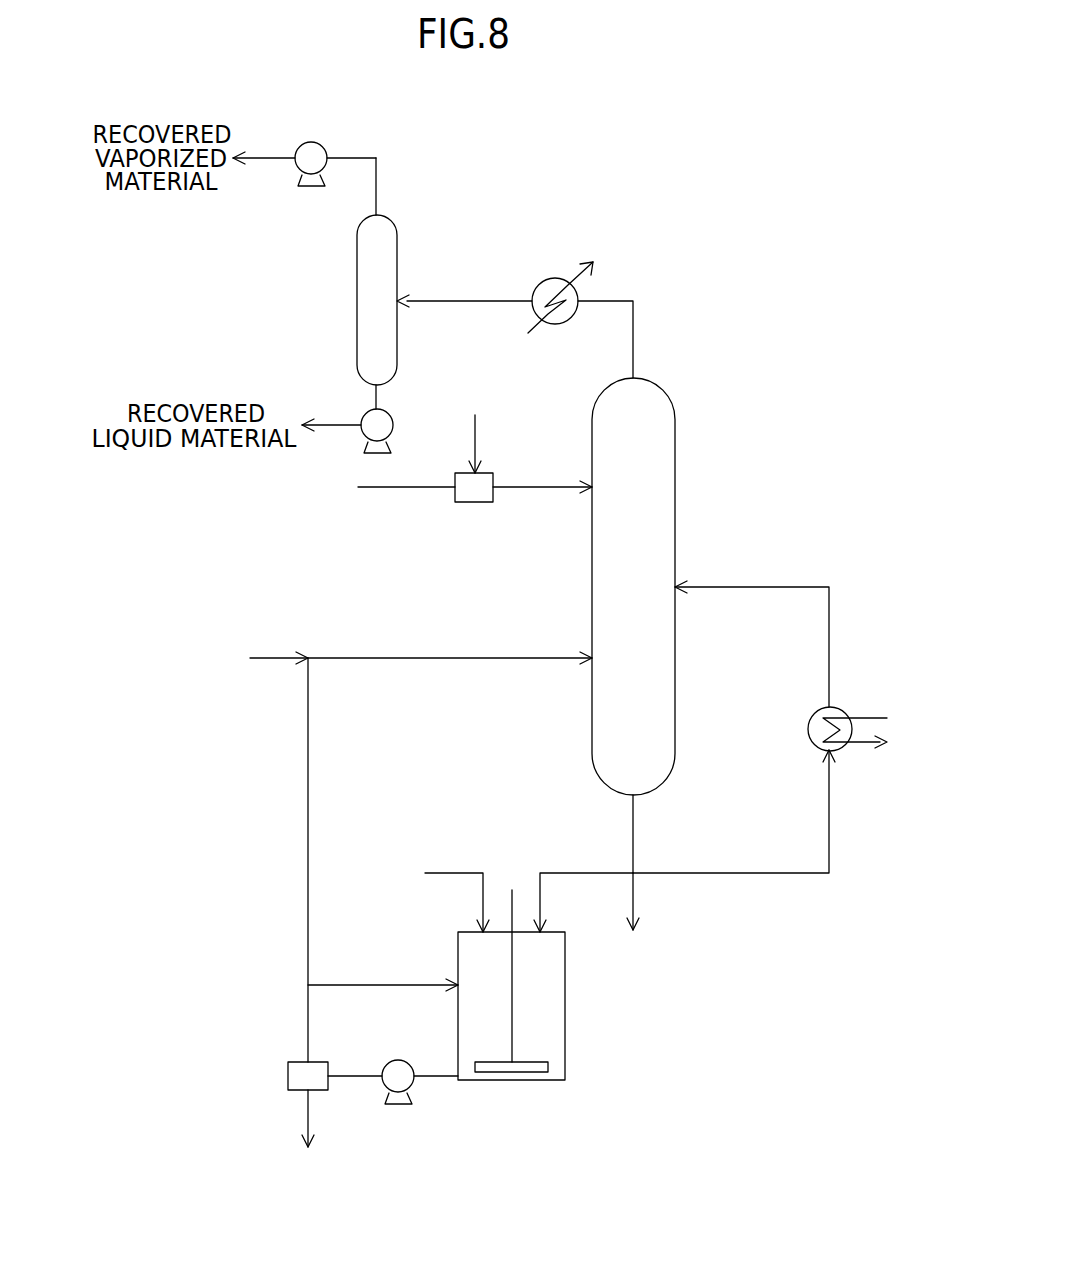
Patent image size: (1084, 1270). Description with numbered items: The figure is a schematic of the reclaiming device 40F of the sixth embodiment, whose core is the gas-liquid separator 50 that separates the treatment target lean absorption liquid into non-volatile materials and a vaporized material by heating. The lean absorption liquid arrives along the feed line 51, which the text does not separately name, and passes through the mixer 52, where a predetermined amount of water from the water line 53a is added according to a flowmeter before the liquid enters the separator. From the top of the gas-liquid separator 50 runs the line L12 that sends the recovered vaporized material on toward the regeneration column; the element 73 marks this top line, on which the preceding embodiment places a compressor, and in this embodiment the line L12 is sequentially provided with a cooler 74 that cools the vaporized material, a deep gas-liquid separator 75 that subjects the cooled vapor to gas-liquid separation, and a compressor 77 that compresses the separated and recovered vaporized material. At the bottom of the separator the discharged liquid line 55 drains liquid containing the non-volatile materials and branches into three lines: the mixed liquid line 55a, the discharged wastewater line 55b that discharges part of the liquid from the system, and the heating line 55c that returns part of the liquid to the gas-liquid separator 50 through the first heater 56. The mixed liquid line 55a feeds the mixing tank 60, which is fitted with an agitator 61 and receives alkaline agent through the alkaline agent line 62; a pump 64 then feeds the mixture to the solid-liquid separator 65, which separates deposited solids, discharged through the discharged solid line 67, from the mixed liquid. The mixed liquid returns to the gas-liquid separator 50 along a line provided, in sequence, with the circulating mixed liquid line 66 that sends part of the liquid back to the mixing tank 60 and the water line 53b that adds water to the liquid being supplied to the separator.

The reclaiming device 40F is at (765, 258).
The gas-liquid separator 50 is at (676, 457).
The raw material supply line 51 is at (390, 488).
The mixer 52 is at (472, 502).
The water line 53a is at (487, 437).
The water line 53b is at (267, 657).
The discharged liquid line 55 is at (635, 830).
The mixed liquid line 55a is at (575, 877).
The discharged wastewater line 55b is at (634, 898).
The heating line 55c is at (788, 875).
The first heater 56 is at (838, 708).
The mixing tank 60 is at (567, 1003).
The agitator 61 is at (502, 900).
The alkaline agent line 62 is at (447, 872).
The pump 64 is at (398, 1105).
The solid-liquid separator 65 is at (287, 1077).
The circulating mixed liquid line 66 is at (378, 983).
The discharged solid line 67 is at (308, 1115).
The compressor 73 is at (635, 332).
The cooler 74 is at (538, 278).
The deep gas-liquid separator 75 is at (357, 292).
The compressor 77 is at (293, 167).
The line L12 is at (378, 188).